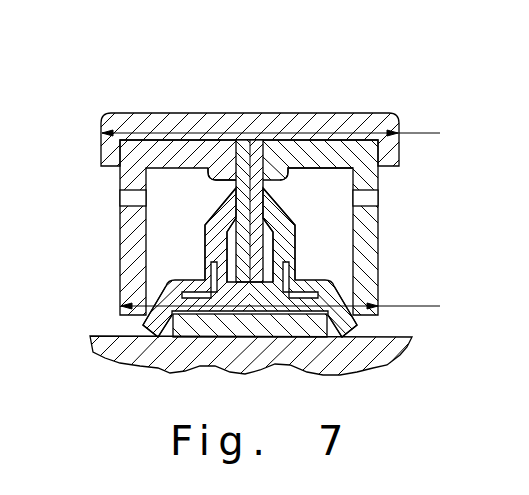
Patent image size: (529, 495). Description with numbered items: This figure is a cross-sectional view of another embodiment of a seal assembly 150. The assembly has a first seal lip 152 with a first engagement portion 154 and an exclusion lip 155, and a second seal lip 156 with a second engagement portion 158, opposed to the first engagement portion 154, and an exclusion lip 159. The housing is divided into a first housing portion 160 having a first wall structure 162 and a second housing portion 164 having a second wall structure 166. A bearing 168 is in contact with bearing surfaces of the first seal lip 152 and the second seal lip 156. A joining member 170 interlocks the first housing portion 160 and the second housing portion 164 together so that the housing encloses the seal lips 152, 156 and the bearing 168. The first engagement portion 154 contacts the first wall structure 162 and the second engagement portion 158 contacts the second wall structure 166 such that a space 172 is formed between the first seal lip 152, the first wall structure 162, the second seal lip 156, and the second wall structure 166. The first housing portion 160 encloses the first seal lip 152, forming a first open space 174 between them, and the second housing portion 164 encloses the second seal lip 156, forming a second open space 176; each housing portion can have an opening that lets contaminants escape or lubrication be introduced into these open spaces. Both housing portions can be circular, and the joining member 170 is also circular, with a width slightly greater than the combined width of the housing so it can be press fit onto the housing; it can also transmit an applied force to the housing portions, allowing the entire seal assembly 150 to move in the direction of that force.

The seal assembly 150 is at (257, 214).
The first seal lip 152 is at (209, 266).
The first engagement portion 154 is at (213, 222).
The exclusion lip 155 is at (141, 327).
The second seal lip 156 is at (291, 268).
The second engagement portion 158 is at (278, 207).
The exclusion lip 159 is at (347, 327).
The first housing portion 160 is at (245, 194).
The first wall structure 162 is at (216, 180).
The second housing portion 164 is at (372, 163).
The second wall structure 166 is at (283, 180).
The bearing 168 is at (233, 332).
The joining member 170 is at (350, 118).
The space 172 is at (240, 289).
The first open space 174 is at (140, 186).
The second open space 176 is at (366, 201).